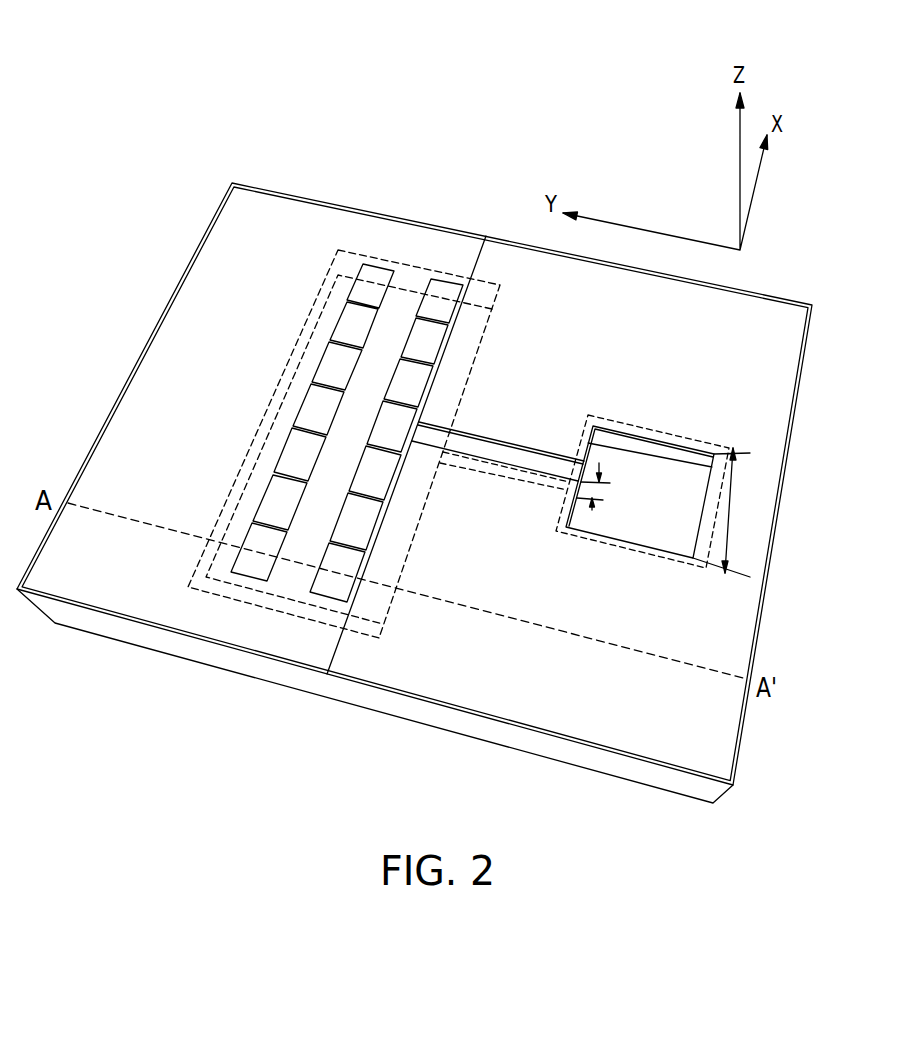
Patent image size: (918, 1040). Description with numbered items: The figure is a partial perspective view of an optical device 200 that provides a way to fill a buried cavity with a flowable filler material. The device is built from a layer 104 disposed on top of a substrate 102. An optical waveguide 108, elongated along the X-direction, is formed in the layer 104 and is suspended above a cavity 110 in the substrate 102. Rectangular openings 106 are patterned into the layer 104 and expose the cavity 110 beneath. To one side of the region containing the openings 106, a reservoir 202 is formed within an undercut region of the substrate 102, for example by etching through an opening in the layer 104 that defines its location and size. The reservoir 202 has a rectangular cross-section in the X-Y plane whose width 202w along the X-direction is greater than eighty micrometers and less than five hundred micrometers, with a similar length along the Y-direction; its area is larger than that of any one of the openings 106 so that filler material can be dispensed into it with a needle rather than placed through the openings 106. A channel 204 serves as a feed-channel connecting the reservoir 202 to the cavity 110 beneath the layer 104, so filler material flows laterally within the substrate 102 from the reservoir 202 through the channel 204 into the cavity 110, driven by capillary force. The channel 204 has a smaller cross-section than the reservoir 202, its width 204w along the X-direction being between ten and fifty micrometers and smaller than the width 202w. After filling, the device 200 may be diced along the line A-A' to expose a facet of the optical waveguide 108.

The optical device 200 is at (152, 98).
The substrate 102 is at (122, 632).
The layer 104 is at (100, 467).
The rectangular openings 106 is at (353, 323).
The optical waveguide 108 is at (350, 415).
The cavity 110 is at (482, 320).
The reservoir 202 is at (657, 472).
The channel 204 is at (507, 455).
The width of channel 204w is at (592, 510).
The width of reservoir 202w is at (740, 516).